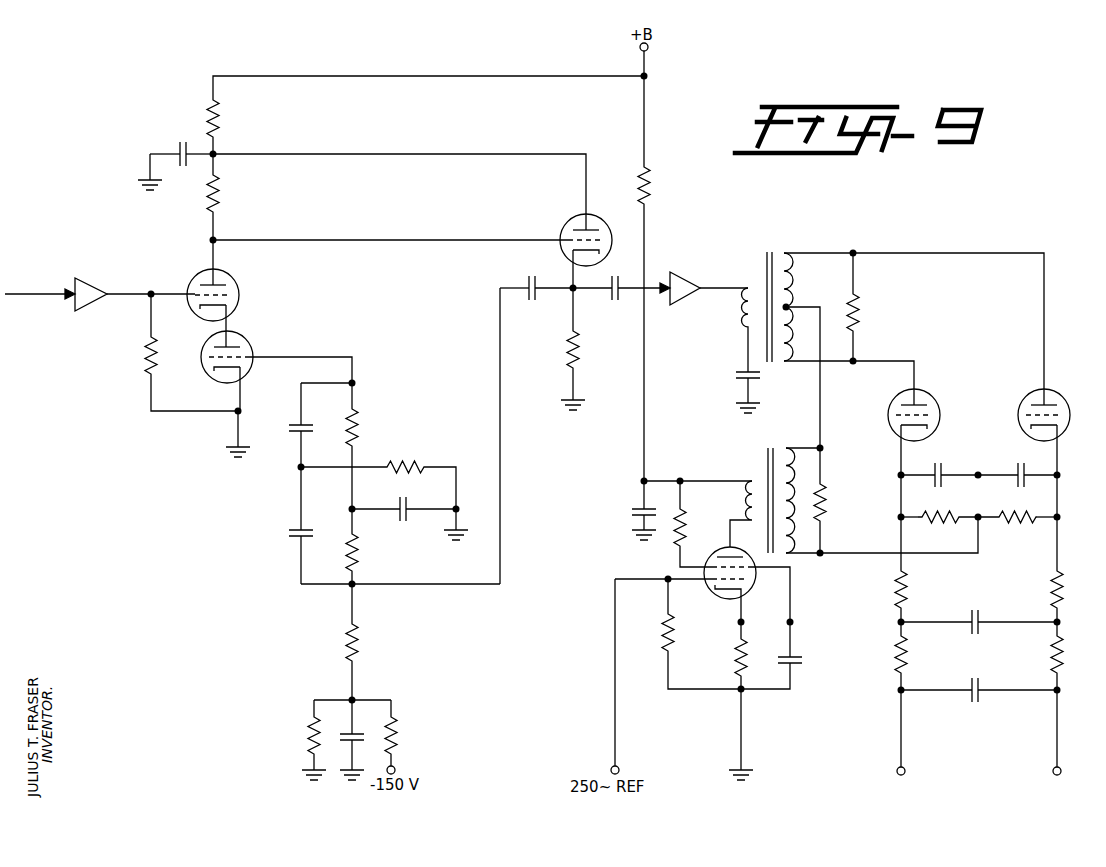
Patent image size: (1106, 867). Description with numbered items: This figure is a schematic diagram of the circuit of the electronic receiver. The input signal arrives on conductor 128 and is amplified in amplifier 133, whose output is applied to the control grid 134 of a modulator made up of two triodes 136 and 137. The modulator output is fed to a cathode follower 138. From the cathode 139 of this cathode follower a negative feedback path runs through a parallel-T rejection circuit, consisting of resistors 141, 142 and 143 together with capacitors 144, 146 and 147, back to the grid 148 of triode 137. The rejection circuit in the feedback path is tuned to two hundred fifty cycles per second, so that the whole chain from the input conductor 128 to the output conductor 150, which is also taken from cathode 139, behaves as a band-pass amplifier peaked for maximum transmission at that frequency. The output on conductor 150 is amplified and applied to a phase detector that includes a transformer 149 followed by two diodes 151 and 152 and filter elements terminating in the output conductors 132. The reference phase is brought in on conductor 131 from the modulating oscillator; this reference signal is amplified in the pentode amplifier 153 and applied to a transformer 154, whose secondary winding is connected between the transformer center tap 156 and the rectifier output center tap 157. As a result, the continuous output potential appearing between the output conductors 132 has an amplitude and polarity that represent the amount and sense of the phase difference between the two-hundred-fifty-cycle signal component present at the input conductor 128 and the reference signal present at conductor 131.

The conductor 128 is at (48, 291).
The conductor 131 is at (615, 668).
The output conductors 132 is at (896, 772).
The amplifier 133 is at (92, 284).
The control grid 134 is at (215, 325).
The triode 136 is at (248, 284).
The triode 137 is at (239, 337).
The cathode follower 138 is at (569, 220).
The cathode 139 is at (569, 254).
The resistor 141 is at (360, 428).
The resistor 142 is at (360, 546).
The resistor 143 is at (412, 459).
The capacitor 144 is at (293, 426).
The capacitor 146 is at (290, 526).
The capacitor 147 is at (408, 502).
The grid 148 is at (250, 356).
The transformer 149 is at (762, 271).
The conductor 150 is at (659, 276).
The diode 151 is at (926, 396).
The diode 152 is at (1022, 396).
The pentode amplifier 153 is at (726, 548).
The transformer 154 is at (763, 468).
The transformer center tap 156 is at (791, 307).
The rectifier output center tap 157 is at (982, 522).